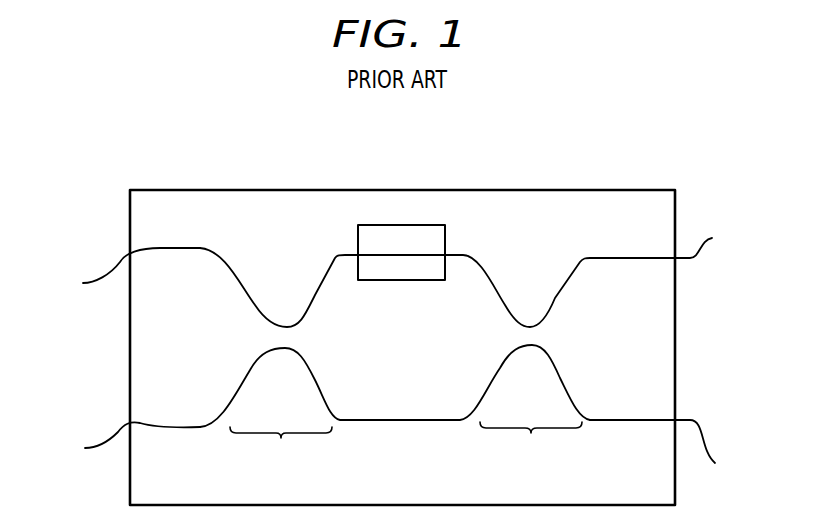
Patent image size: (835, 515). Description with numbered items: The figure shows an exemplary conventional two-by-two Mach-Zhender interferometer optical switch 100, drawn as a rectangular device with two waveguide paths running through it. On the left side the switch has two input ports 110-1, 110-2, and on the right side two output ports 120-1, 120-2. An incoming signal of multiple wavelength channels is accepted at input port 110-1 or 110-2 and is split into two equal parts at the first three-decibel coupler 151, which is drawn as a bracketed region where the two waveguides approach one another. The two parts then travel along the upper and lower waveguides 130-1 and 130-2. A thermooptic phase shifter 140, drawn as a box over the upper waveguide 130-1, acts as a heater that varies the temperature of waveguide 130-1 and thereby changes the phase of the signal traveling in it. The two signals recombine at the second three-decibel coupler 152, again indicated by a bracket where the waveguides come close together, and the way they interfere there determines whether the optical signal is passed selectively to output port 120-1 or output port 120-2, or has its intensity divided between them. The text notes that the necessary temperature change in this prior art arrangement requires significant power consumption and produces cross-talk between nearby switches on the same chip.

The Mach-Zhender interferometer optical switch 100 is at (397, 190).
The input port 110-1 is at (111, 273).
The input port 110-2 is at (111, 443).
The output port 120-1 is at (685, 241).
The output port 120-2 is at (685, 449).
The waveguide 130-1 is at (238, 278).
The waveguide 130-2 is at (408, 421).
The thermooptic phase shifter 140 is at (445, 240).
The 3 dB coupler 151 is at (281, 449).
The 3 dB coupler 152 is at (531, 445).